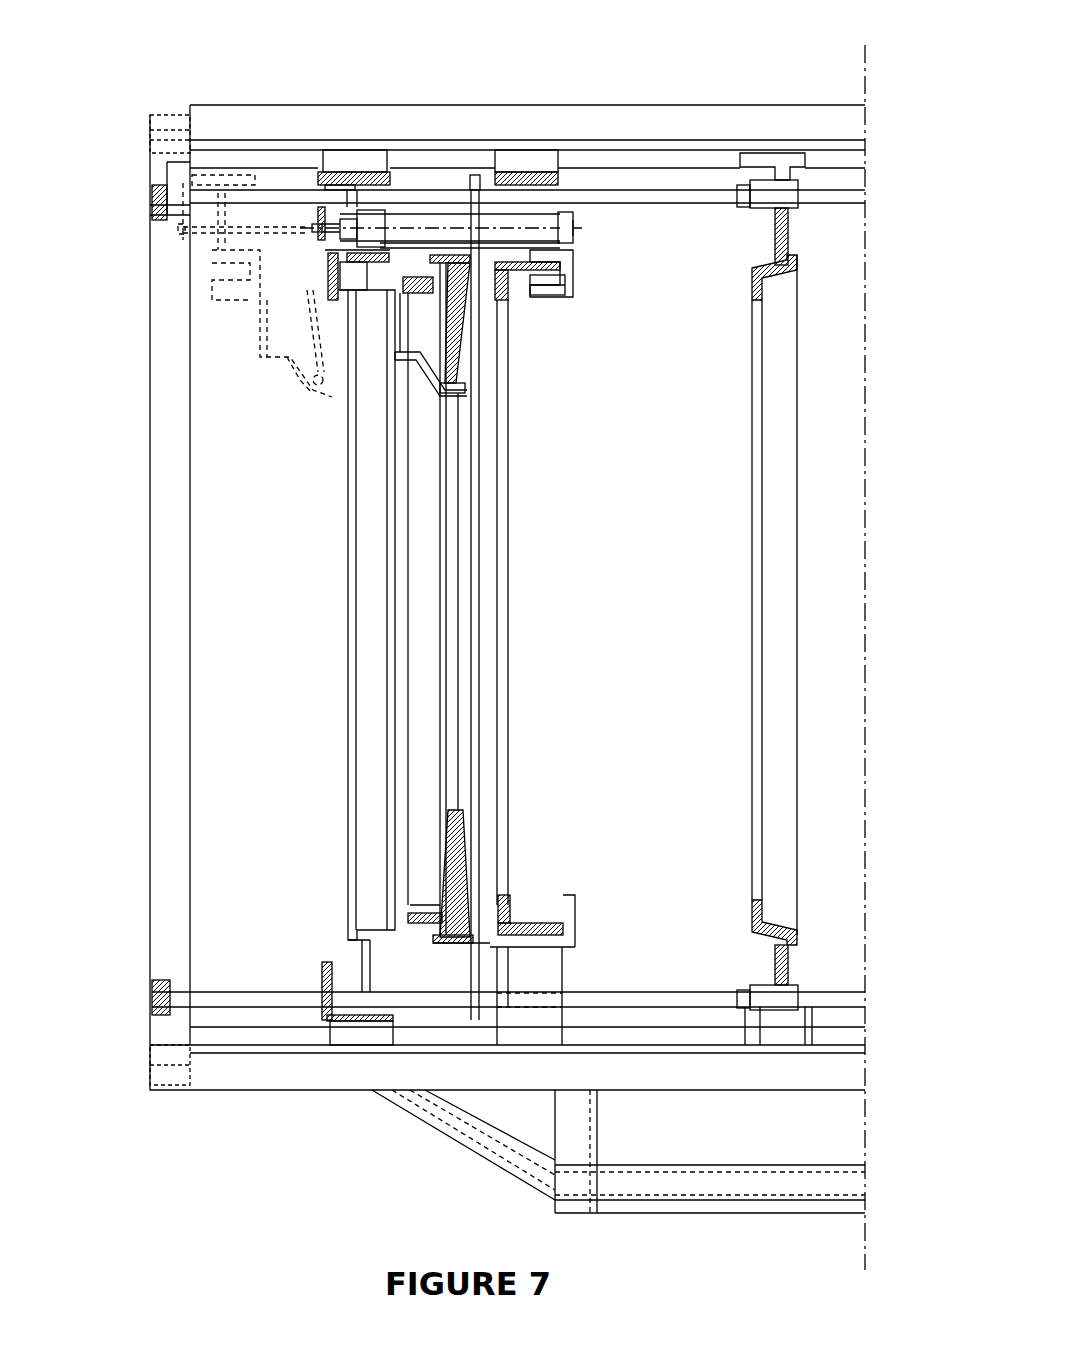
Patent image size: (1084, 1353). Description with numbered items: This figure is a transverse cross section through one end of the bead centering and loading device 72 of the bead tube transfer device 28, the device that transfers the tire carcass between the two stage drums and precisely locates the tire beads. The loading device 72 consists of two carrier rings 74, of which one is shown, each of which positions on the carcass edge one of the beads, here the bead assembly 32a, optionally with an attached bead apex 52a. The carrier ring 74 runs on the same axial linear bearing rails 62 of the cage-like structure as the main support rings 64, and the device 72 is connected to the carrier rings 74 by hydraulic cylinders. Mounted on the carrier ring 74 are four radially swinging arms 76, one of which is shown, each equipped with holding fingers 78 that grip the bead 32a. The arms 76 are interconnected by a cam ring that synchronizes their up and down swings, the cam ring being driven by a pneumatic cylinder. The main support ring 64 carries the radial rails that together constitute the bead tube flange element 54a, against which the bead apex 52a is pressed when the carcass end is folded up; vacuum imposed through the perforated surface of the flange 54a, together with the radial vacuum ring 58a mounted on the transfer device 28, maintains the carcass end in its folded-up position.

The bead tube transfer device 28 is at (731, 76).
The axial linear bearing rails 62 is at (263, 162).
The carrier ring 74 is at (337, 167).
The radially swinging arm 76 is at (387, 287).
The main support ring 64 is at (523, 168).
The bead centering and loading device 72 is at (180, 315).
The flange element 54a is at (462, 312).
The bead apex 52a is at (462, 352).
The bead assembly 32a is at (462, 374).
The holding fingers 78 is at (462, 393).
The radial vacuum ring 58a is at (427, 517).